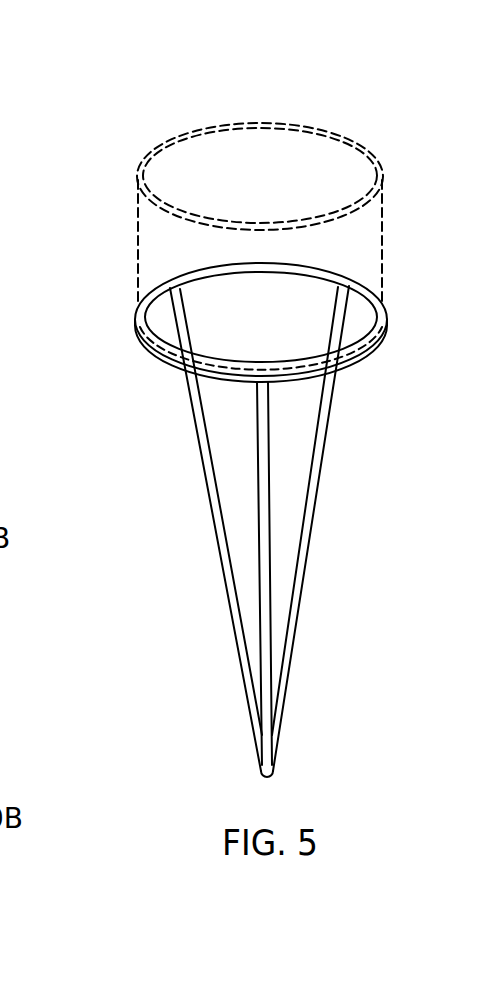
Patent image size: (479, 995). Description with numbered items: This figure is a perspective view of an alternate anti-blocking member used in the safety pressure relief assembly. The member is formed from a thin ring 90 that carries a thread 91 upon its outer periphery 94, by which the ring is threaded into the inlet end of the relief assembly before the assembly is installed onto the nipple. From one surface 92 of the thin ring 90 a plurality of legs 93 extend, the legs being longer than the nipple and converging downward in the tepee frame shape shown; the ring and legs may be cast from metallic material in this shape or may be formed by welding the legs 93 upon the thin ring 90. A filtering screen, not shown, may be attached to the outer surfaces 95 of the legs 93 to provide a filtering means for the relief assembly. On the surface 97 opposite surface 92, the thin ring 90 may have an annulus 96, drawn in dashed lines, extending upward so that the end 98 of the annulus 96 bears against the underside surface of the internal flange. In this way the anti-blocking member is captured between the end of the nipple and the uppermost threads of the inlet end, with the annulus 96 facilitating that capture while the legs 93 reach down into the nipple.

The thin ring 90 is at (247, 339).
The thread 91 is at (348, 366).
The surface 92 is at (160, 363).
The legs 93 is at (247, 531).
The outer periphery 94 is at (133, 331).
The outer surfaces 95 is at (265, 640).
The annulus 96 is at (303, 190).
The surface 97 is at (138, 320).
The end 98 is at (265, 128).